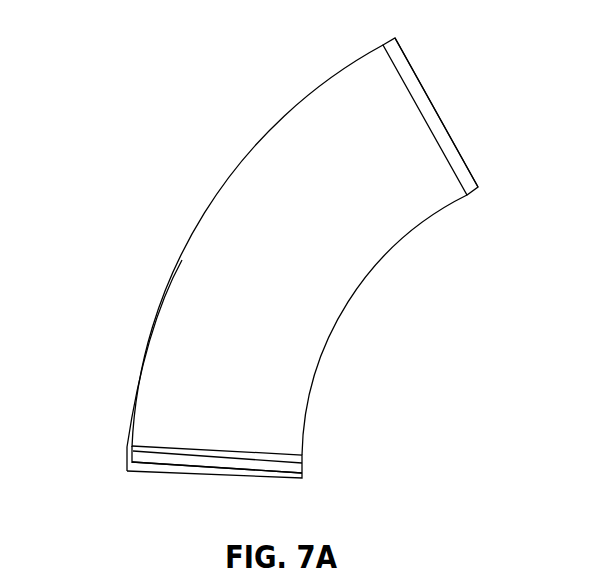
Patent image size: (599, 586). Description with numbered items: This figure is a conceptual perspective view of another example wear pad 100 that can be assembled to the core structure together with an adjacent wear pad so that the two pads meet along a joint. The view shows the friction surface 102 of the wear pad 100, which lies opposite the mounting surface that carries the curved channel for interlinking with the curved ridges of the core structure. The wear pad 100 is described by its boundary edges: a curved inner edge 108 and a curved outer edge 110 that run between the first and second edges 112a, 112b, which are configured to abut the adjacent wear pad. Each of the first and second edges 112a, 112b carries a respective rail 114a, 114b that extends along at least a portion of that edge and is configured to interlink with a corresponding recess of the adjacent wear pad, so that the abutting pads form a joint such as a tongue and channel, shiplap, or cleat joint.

The wear pad 100 is at (144, 39).
The friction surface 102 is at (302, 194).
The inner edge 108 is at (357, 297).
The outer curved surface 110 is at (267, 130).
The first edge 112a is at (423, 82).
The second edge 112b is at (226, 474).
The rail 114a is at (452, 158).
The rail 114b is at (163, 458).